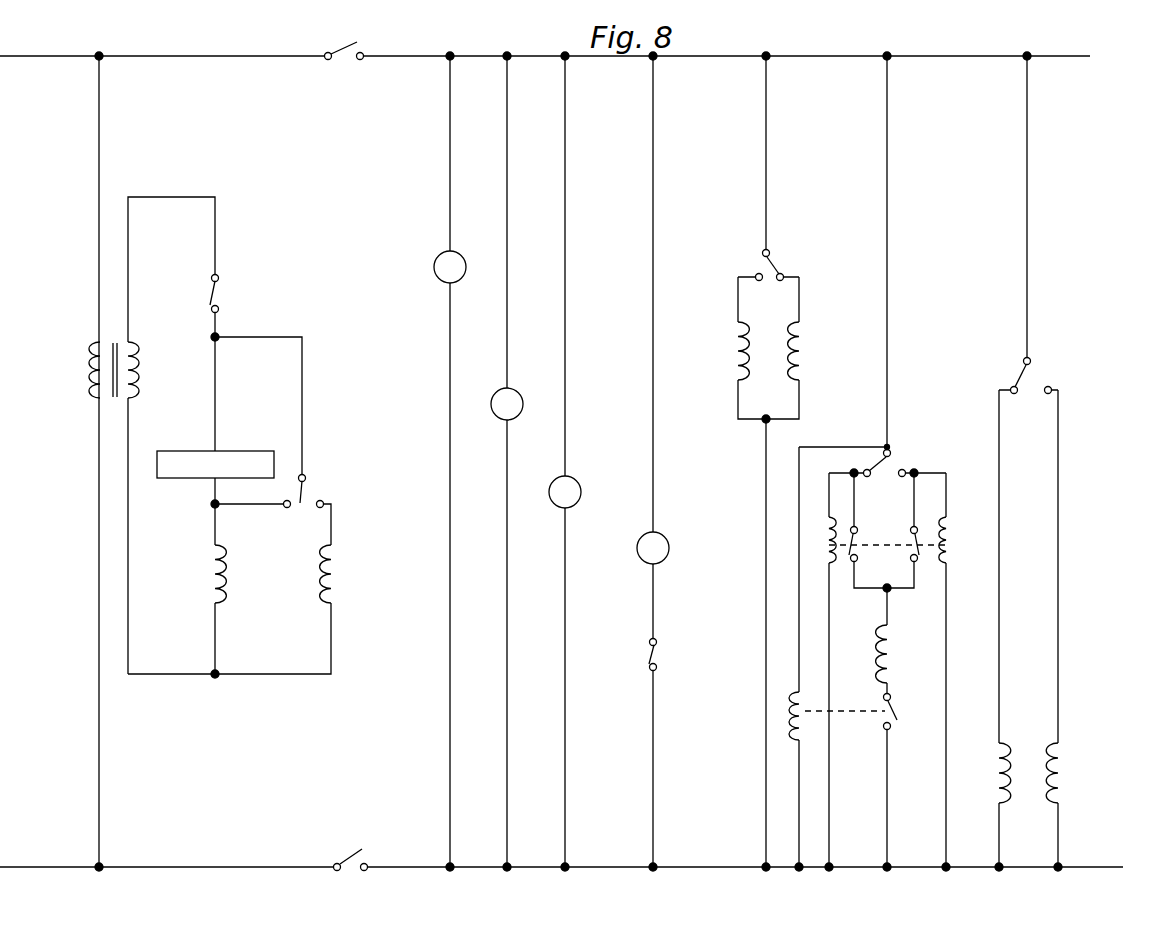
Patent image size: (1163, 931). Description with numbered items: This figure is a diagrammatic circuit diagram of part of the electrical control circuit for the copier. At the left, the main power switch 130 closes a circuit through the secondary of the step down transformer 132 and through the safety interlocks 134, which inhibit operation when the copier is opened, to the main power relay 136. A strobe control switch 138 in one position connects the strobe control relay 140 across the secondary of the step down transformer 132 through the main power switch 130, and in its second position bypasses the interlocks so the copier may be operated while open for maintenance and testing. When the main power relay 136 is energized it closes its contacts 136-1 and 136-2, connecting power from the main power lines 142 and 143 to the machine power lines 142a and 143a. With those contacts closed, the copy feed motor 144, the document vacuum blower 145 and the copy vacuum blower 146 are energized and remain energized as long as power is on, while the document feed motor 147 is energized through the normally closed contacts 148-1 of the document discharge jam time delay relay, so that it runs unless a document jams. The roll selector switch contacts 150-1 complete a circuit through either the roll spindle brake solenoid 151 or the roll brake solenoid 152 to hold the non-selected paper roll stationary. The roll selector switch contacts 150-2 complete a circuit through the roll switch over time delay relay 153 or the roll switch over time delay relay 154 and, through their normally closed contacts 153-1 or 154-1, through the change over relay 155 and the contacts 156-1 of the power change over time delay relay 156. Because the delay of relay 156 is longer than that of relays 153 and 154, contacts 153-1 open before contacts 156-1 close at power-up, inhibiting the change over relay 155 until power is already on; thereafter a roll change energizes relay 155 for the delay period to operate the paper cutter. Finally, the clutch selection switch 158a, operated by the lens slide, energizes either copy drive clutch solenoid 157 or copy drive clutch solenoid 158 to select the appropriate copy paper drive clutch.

The main power switch 130 is at (222, 296).
The step down transformer 132 is at (88, 383).
The safety interlocks 134 is at (215, 464).
The main power relay 136 is at (228, 598).
The main power relay contact 136-1 is at (323, 41).
The main power relay contact 136-2 is at (352, 846).
The strobe control switch 138 is at (300, 503).
The strobe control relay 140 is at (343, 596).
The main power line 142 is at (61, 49).
The machine power line 142a is at (1045, 56).
The main power line 143 is at (81, 858).
The machine power line 143a is at (1077, 867).
The copy feed motor 144 is at (434, 272).
The document vacuum blower 145 is at (523, 393).
The copy vacuum blower 146 is at (580, 480).
The document feed motor 147 is at (668, 556).
The normally closed contacts of document discharge jam time delay relay 148-1 is at (658, 653).
The roll selector switch contacts 150-1 is at (772, 266).
The roll selector switch contacts 150-2 is at (893, 462).
The roll spindle brake solenoid 151 is at (806, 368).
The roll brake solenoid 152 is at (731, 349).
The roll switch over time delay relay 153 is at (840, 580).
The switch over time delay relay contacts 153-1 is at (858, 540).
The roll switch over time delay relay 154 is at (950, 562).
The switch over time delay relay contacts 154-1 is at (912, 548).
The change over relay 155 is at (892, 650).
The power change over time delay relay 156 is at (806, 728).
The power change over time delay relay contacts 156-1 is at (898, 712).
The copy drive clutch solenoid 157 is at (1004, 785).
The copy drive clutch solenoid 158 is at (1064, 777).
The clutch selection switch 158a is at (1022, 370).